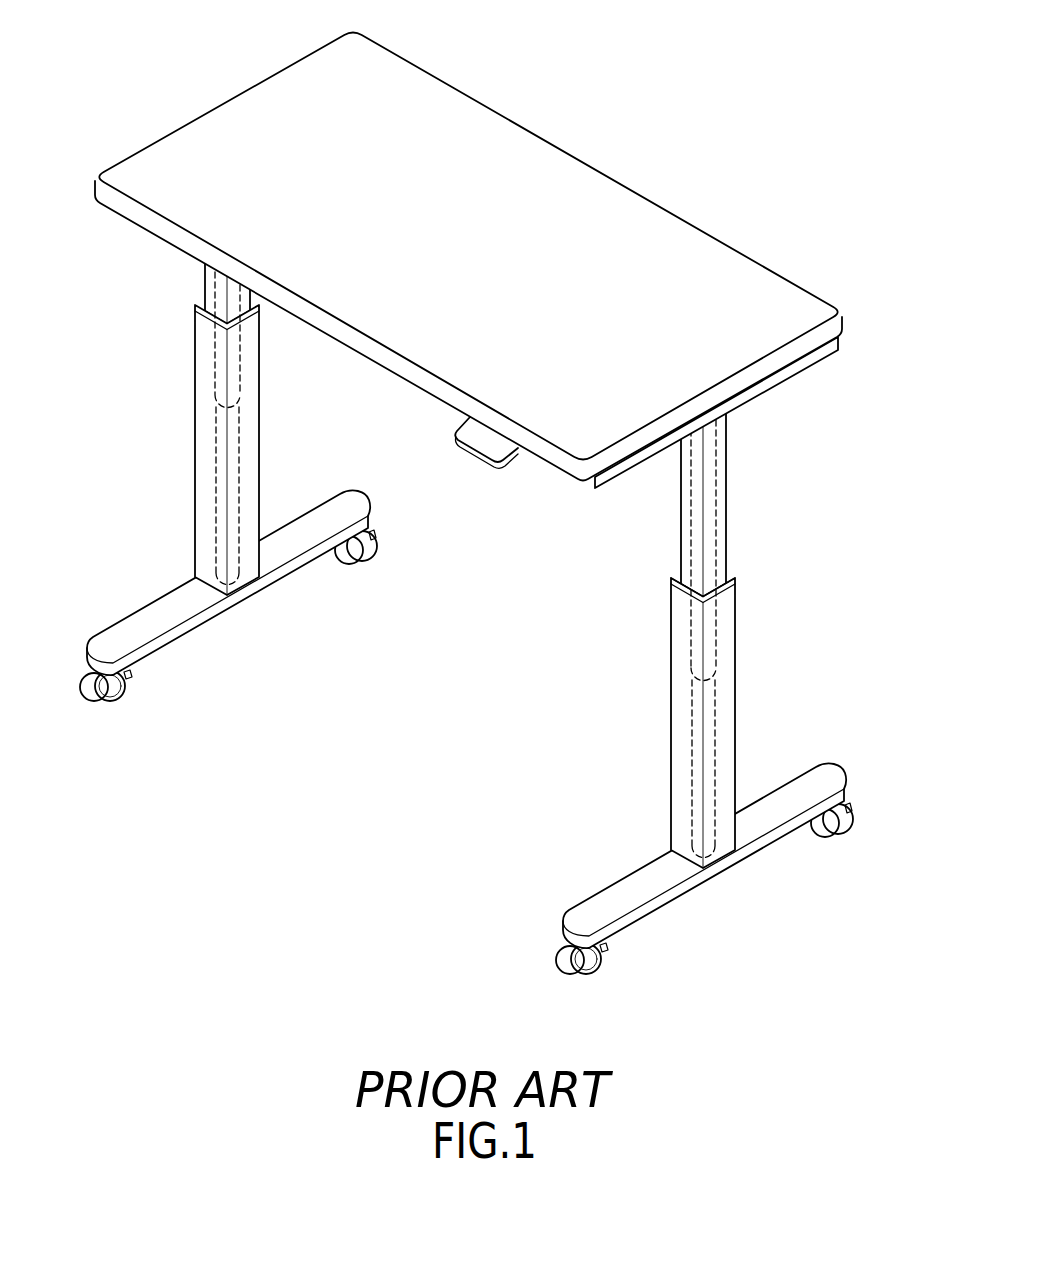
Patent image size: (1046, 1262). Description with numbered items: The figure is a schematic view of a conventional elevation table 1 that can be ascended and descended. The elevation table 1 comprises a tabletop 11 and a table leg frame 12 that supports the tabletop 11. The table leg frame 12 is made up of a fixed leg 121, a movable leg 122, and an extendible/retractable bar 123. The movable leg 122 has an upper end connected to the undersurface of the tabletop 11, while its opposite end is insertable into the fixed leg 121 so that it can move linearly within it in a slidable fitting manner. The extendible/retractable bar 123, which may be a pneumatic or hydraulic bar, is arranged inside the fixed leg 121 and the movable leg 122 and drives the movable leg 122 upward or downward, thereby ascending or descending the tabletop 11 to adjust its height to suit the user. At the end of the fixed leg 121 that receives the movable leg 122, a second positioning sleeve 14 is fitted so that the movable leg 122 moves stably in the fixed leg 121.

The elevation table 1 is at (463, 498).
The tabletop 11 is at (678, 240).
The table leg frame 12 is at (463, 614).
The fixed leg 121 is at (731, 715).
The movable leg 122 is at (724, 508).
The extendible/retractable bar 123 is at (218, 366).
The second positioning sleeve 14 is at (733, 580).